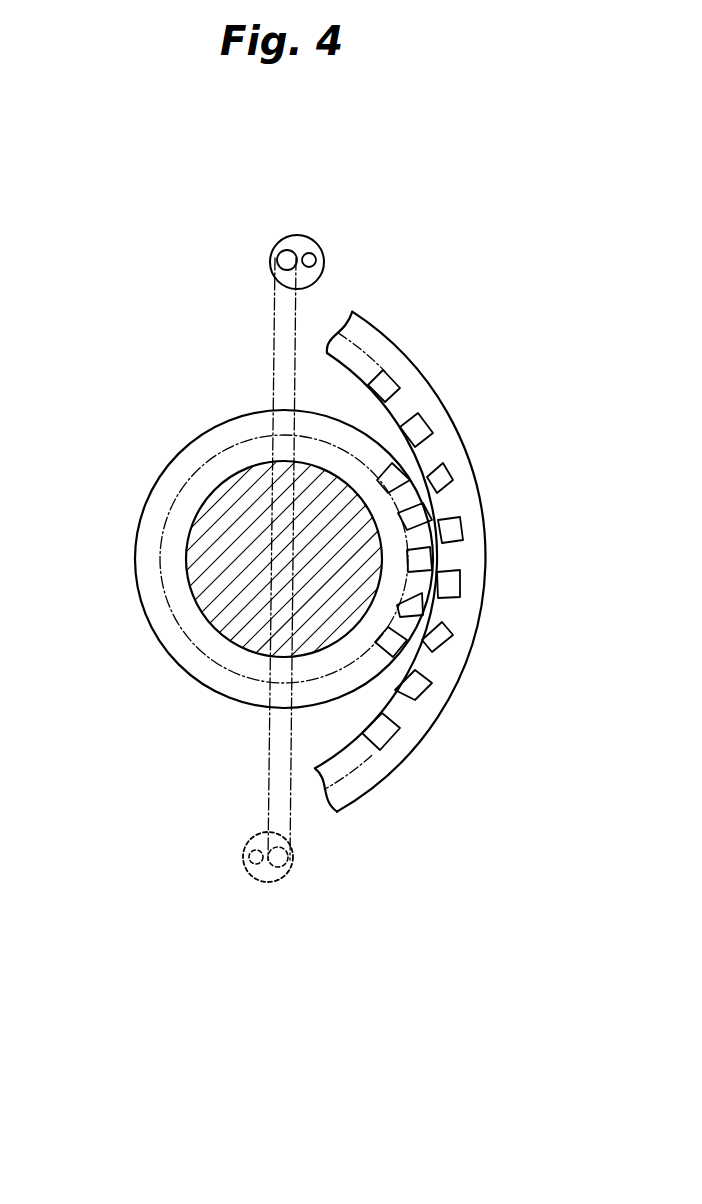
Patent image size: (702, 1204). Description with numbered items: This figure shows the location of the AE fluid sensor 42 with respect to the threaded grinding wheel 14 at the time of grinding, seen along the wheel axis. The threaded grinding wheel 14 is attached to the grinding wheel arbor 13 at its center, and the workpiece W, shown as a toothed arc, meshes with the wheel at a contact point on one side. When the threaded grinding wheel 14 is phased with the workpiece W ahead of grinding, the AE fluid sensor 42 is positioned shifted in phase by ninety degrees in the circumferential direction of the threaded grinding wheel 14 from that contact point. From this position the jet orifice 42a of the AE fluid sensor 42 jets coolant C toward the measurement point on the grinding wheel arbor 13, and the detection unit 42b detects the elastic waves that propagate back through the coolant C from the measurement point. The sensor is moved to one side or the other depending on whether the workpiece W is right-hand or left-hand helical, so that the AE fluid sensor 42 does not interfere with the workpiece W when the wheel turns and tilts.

The grinding wheel arbor 13 is at (203, 503).
The threaded grinding wheel 14 is at (137, 594).
The AE fluid sensor 42 is at (287, 233).
The jet orifice 42a is at (272, 254).
The detection unit 42b is at (317, 250).
The coolant C is at (273, 330).
The workpiece W is at (460, 430).